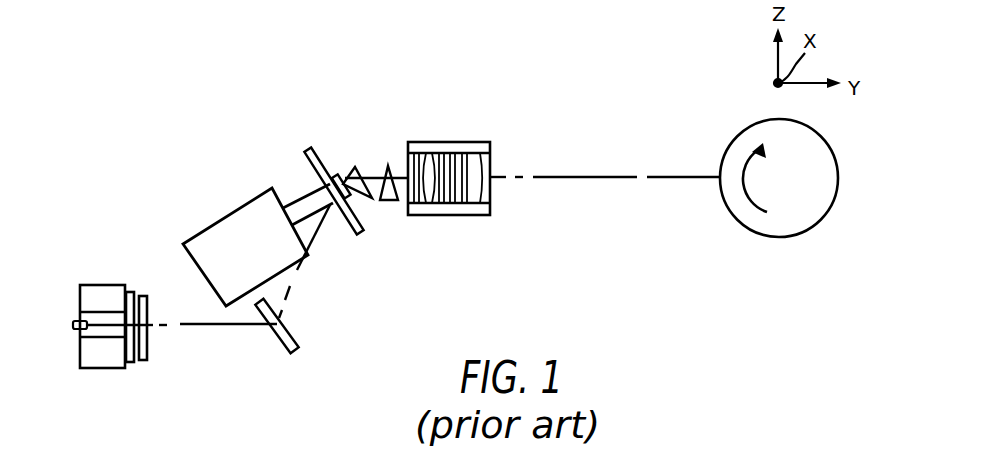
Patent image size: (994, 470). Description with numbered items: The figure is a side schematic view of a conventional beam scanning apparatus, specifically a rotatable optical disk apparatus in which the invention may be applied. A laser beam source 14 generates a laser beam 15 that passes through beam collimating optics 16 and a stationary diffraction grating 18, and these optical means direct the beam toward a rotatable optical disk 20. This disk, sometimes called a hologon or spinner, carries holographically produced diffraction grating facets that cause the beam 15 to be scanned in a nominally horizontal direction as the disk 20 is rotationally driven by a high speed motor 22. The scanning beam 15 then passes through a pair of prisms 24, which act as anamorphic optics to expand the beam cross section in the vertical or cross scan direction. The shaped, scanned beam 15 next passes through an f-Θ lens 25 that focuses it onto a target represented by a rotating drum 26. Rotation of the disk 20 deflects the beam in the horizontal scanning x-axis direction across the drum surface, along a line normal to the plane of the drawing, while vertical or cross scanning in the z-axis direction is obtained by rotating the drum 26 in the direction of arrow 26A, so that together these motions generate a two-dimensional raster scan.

The laser beam source 14 is at (78, 331).
The laser beam 15 is at (230, 326).
The beam collimating optics 16 is at (108, 369).
The stationary diffraction grating 18 is at (289, 318).
The rotatable optical disk 20 is at (319, 157).
The high speed motor 22 is at (215, 220).
The pair of prisms 24 is at (368, 172).
The f-Θ lens 25 is at (452, 138).
The rotating drum 26 is at (728, 154).
The arrow 26A is at (748, 200).